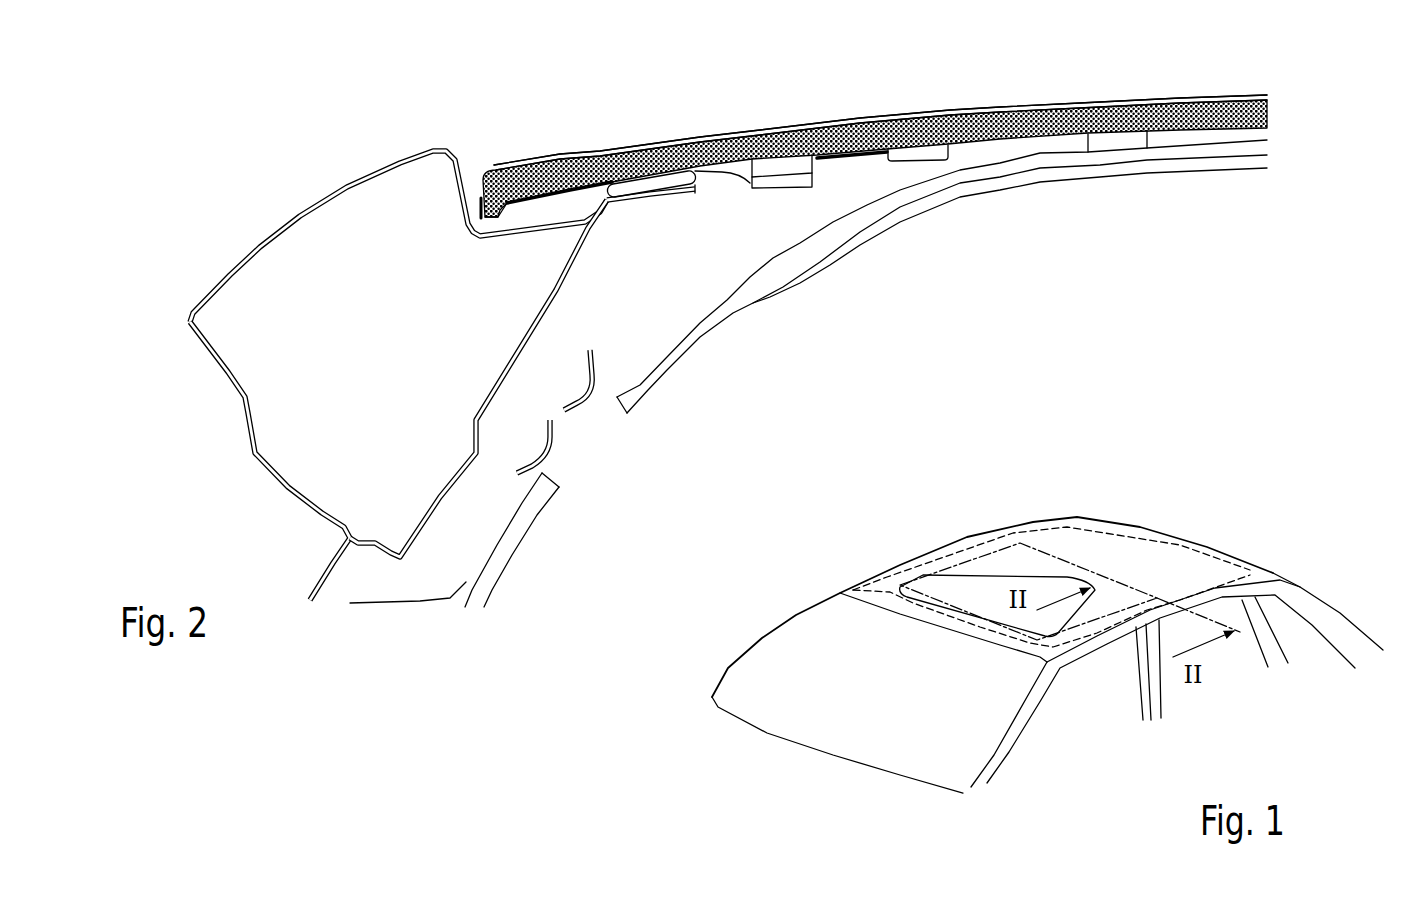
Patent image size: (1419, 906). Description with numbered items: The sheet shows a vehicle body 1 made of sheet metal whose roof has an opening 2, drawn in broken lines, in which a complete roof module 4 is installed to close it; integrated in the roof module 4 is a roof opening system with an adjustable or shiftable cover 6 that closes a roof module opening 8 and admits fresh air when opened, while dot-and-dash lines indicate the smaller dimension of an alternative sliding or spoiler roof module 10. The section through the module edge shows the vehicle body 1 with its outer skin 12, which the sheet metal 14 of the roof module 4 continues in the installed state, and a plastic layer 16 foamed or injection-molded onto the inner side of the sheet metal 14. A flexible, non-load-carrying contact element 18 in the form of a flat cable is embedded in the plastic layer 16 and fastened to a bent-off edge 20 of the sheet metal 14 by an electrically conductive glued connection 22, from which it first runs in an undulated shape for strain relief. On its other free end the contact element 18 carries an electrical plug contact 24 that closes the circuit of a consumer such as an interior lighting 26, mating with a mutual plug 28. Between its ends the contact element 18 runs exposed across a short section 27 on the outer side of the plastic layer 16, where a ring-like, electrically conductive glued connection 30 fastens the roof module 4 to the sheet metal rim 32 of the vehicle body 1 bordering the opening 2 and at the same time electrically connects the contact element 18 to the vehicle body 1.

In FIG. 2, the vehicle body 1 is at (243, 360).
In FIG. 1, the vehicle body 1 is at (1353, 630).
In FIG. 2, the opening 2 is at (707, 193).
In FIG. 1, the opening 2 is at (1200, 570).
In FIG. 2, the roof module 4 is at (890, 104).
In FIG. 1, the roof module 4 is at (1048, 522).
In FIG. 1, the cover 6 is at (966, 570).
In FIG. 1, the roof module opening 8 is at (890, 598).
In FIG. 1, the sliding or spoiler roof module 10 is at (1070, 570).
In FIG. 2, the outer skin 12 is at (293, 220).
In FIG. 2, the sheet metal 14 is at (593, 152).
In FIG. 2, the plastic layer 16 is at (541, 172).
In FIG. 2, the contact element 18 is at (523, 200).
In FIG. 2, the bent-off edge 20 is at (481, 212).
In FIG. 2, the glued connection 22 is at (481, 186).
In FIG. 2, the plug contact 24 is at (783, 192).
In FIG. 2, the interior lighting 26 is at (920, 153).
In FIG. 2, the section 27 is at (690, 168).
In FIG. 2, the mutual plug 28 is at (776, 172).
In FIG. 2, the glued connection 30 is at (641, 184).
In FIG. 2, the sheet metal rim 32 is at (656, 202).